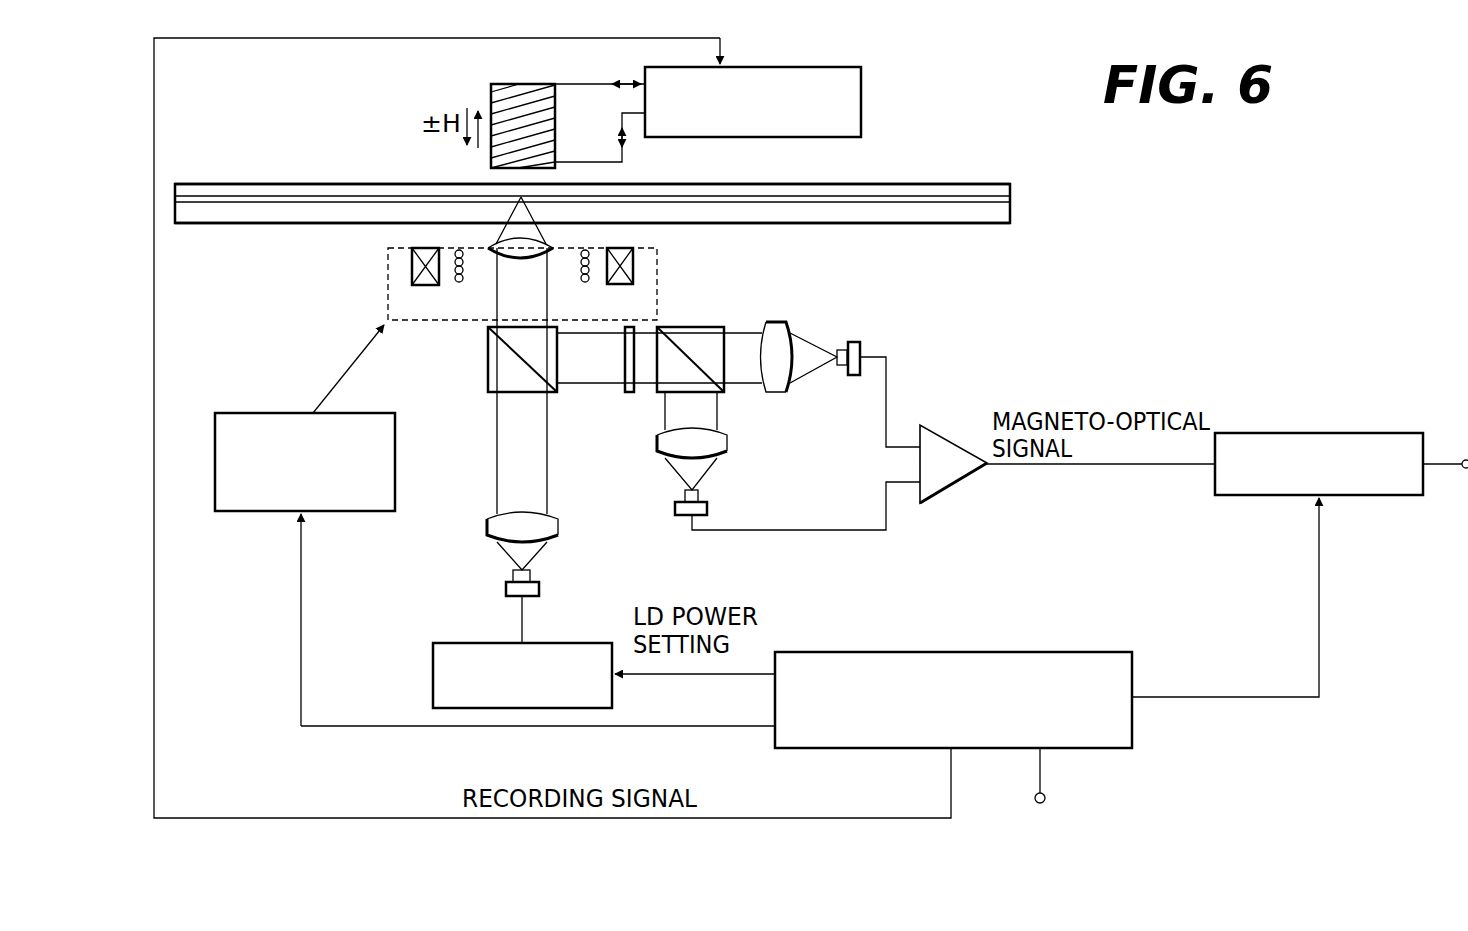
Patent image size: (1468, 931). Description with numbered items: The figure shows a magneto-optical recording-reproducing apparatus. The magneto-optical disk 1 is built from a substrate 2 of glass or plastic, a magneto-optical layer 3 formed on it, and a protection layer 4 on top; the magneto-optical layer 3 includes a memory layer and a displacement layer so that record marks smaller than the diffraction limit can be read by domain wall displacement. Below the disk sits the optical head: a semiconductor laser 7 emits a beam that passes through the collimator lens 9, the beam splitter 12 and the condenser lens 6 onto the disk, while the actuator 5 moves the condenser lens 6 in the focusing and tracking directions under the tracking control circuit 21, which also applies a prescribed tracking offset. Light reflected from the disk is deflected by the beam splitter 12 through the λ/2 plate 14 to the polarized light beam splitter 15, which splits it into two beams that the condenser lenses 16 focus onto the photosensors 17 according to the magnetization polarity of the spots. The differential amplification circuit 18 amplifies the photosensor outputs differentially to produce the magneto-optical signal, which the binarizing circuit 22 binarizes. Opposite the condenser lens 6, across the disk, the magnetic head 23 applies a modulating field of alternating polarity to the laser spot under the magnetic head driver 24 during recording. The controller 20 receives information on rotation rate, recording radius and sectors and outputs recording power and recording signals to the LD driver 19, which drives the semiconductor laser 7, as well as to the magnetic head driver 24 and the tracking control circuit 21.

The magneto-optical disk 1 is at (621, 194).
The substrate 2 is at (1012, 212).
The magneto-optical layer 3 is at (1012, 199).
The protection layer 4 is at (1012, 186).
The actuator 5 is at (638, 286).
The condenser lens 6 is at (553, 248).
The semiconductor laser 7 is at (506, 588).
The collimator lens 9 is at (487, 524).
The beam splitter 12 is at (488, 352).
The λ/2 plate 14 is at (630, 392).
The polarized light beam splitter 15 is at (716, 327).
The condenser lens 16 is at (776, 322).
The photosensor 17 is at (853, 342).
The differential amplification circuit 18 is at (963, 441).
The LD driver 19 is at (588, 643).
The controller 20 is at (1132, 667).
The tracking control circuit 21 is at (243, 413).
The binarizing circuit 22 is at (1362, 433).
The magnetic head 23 is at (546, 84).
The magnetic head driver 24 is at (838, 67).